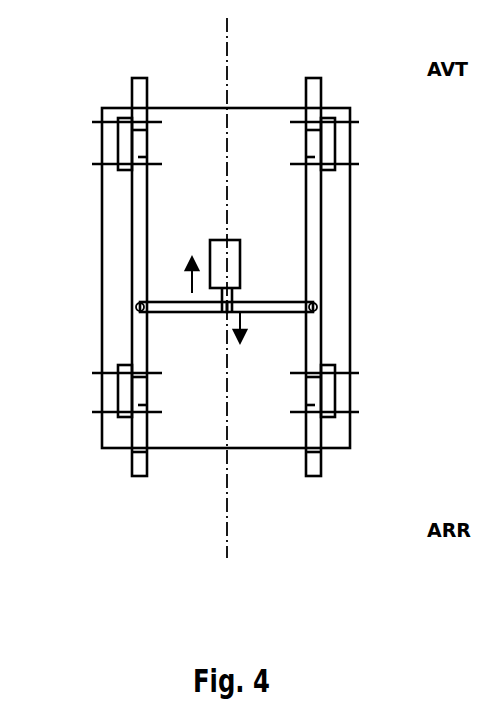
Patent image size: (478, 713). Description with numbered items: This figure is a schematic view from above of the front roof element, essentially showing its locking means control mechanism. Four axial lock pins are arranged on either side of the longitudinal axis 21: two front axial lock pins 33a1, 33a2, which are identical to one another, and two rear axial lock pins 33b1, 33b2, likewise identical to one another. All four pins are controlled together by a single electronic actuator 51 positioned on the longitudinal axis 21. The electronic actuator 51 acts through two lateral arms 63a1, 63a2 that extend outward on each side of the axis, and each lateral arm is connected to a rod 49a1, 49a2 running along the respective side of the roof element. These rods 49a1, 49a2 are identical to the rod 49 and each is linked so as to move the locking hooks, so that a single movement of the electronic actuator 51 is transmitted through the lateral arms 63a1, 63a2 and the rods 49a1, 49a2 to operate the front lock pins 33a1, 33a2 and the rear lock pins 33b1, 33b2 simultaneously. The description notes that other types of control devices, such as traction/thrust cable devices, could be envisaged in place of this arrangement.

The longitudinal axis 21 is at (228, 527).
The front axial lock pin 33a1 is at (137, 92).
The front axial lock pin 33a2 is at (318, 97).
The rear axial lock pin 33b1 is at (134, 455).
The rear axial lock pin 33b2 is at (307, 455).
The rod 49 is at (290, 278).
The rod 49a1 is at (139, 288).
The rod 49a2 is at (314, 277).
The electronic actuator 51 is at (242, 275).
The lateral arm 63a1 is at (175, 312).
The lateral arm 63a2 is at (272, 313).